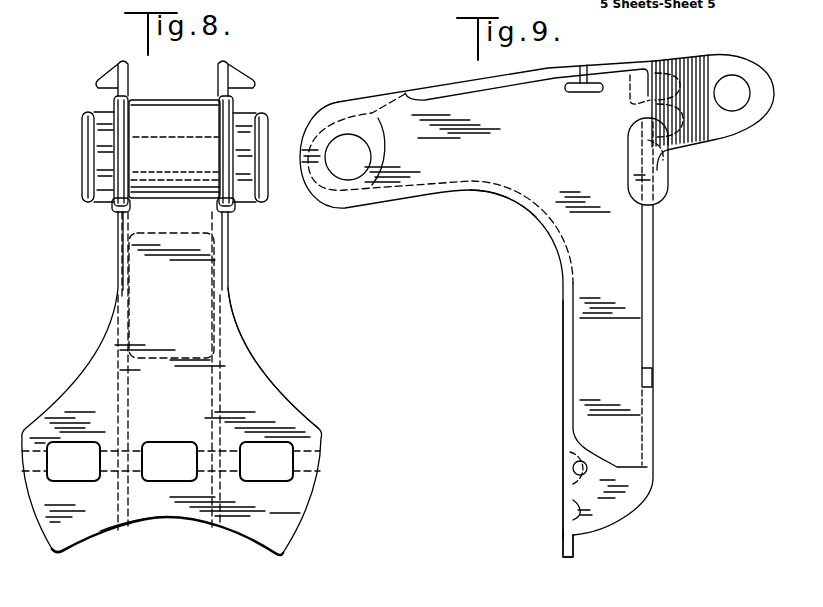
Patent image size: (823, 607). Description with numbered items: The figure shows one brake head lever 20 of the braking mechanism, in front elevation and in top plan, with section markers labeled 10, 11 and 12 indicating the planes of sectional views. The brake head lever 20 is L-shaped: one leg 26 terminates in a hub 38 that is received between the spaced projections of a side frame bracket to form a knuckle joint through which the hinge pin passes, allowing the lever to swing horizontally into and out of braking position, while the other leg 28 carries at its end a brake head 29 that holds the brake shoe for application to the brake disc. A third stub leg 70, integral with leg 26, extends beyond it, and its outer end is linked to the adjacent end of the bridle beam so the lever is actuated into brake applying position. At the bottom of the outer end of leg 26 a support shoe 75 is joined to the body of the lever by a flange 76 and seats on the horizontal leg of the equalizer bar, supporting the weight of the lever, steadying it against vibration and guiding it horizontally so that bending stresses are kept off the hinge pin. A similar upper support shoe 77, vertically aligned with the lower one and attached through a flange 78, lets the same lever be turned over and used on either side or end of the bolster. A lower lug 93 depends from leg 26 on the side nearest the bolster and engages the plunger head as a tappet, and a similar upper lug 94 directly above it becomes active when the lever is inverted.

In FIG. 8, the side frame 10 is at (298, 170).
In FIG. 9, the side frame 10 is at (788, 110).
In FIG. 9, the section line 11 is at (553, 192).
In FIG. 9, the bolster 12 is at (405, 76).
In FIG. 8, the brake head lever 20 is at (268, 387).
In FIG. 9, the brake head lever 20 is at (657, 402).
In FIG. 9, the leg 26 is at (507, 160).
In FIG. 8, the leg 28 is at (234, 326).
In FIG. 9, the leg 28 is at (592, 328).
In FIG. 8, the brake head 29 is at (184, 516).
In FIG. 9, the brake head 29 is at (566, 541).
In FIG. 9, the hub 38 is at (356, 197).
In FIG. 9, the stub leg 70 is at (718, 64).
In FIG. 8, the support shoe 75 is at (263, 121).
In FIG. 8, the flange 76 is at (244, 200).
In FIG. 8, the support shoe 77 is at (83, 196).
In FIG. 9, the support shoe 77 is at (668, 203).
In FIG. 8, the flange 78 is at (108, 201).
In FIG. 8, the lug 93 is at (249, 80).
In FIG. 8, the lug 94 is at (104, 76).
In FIG. 9, the lug 94 is at (578, 92).